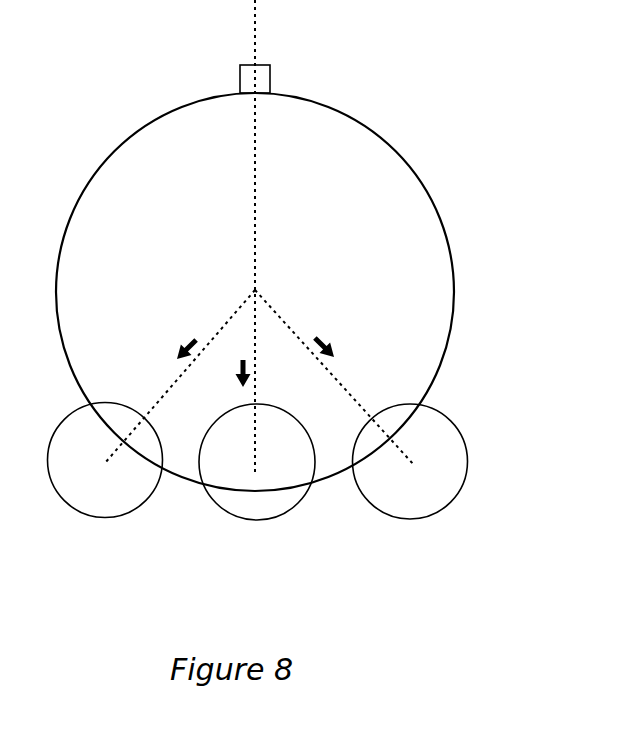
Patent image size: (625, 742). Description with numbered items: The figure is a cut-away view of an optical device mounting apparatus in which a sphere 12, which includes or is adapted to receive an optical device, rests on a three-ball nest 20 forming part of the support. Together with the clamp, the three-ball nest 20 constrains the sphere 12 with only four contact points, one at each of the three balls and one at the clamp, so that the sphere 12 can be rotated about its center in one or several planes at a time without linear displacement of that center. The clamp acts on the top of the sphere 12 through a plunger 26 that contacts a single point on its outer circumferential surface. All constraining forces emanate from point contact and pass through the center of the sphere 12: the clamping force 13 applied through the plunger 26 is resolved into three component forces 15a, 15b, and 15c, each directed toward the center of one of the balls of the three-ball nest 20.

The sphere 12 is at (437, 205).
The clamping force 13 is at (298, 144).
The component force 15a is at (192, 338).
The component force 15b is at (236, 365).
The component force 15c is at (321, 338).
The three-ball nest 20 is at (222, 488).
The plunger 26 is at (262, 64).